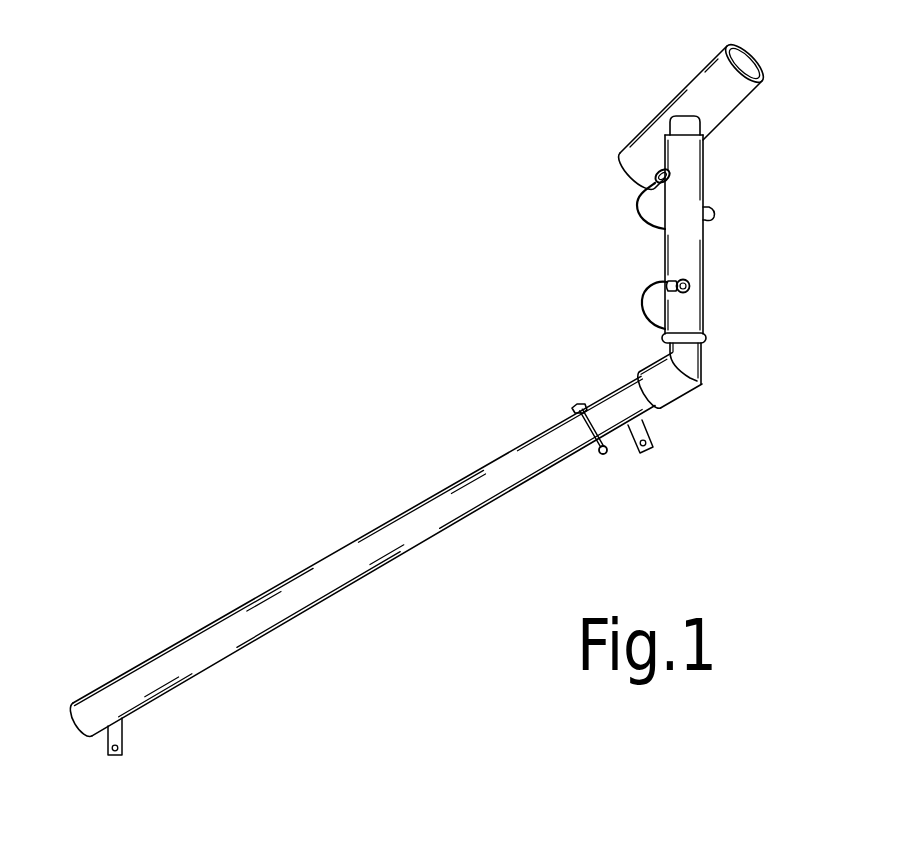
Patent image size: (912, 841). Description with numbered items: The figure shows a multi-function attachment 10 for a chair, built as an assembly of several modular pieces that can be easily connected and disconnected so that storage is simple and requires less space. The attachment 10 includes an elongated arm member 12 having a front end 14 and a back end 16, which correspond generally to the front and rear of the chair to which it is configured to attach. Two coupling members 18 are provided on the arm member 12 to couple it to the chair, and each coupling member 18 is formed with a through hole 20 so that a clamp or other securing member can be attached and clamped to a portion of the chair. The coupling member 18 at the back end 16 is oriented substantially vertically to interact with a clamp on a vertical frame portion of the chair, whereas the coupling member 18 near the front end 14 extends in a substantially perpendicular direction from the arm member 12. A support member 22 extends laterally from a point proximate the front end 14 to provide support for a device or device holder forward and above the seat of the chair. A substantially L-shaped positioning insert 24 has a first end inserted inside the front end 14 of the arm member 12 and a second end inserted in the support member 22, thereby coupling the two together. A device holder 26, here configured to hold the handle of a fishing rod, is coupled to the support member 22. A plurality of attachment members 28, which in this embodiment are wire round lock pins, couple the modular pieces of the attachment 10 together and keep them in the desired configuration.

The attachment 10 is at (338, 248).
The arm member 12 is at (246, 603).
The front end 14 is at (620, 386).
The back end 16 is at (120, 676).
The coupling member 18 is at (122, 728).
The through hole 20 is at (118, 753).
The support member 22 is at (703, 233).
The positioning insert 24 is at (703, 366).
The device holder 26 is at (697, 76).
The attachment member 28 is at (638, 217).